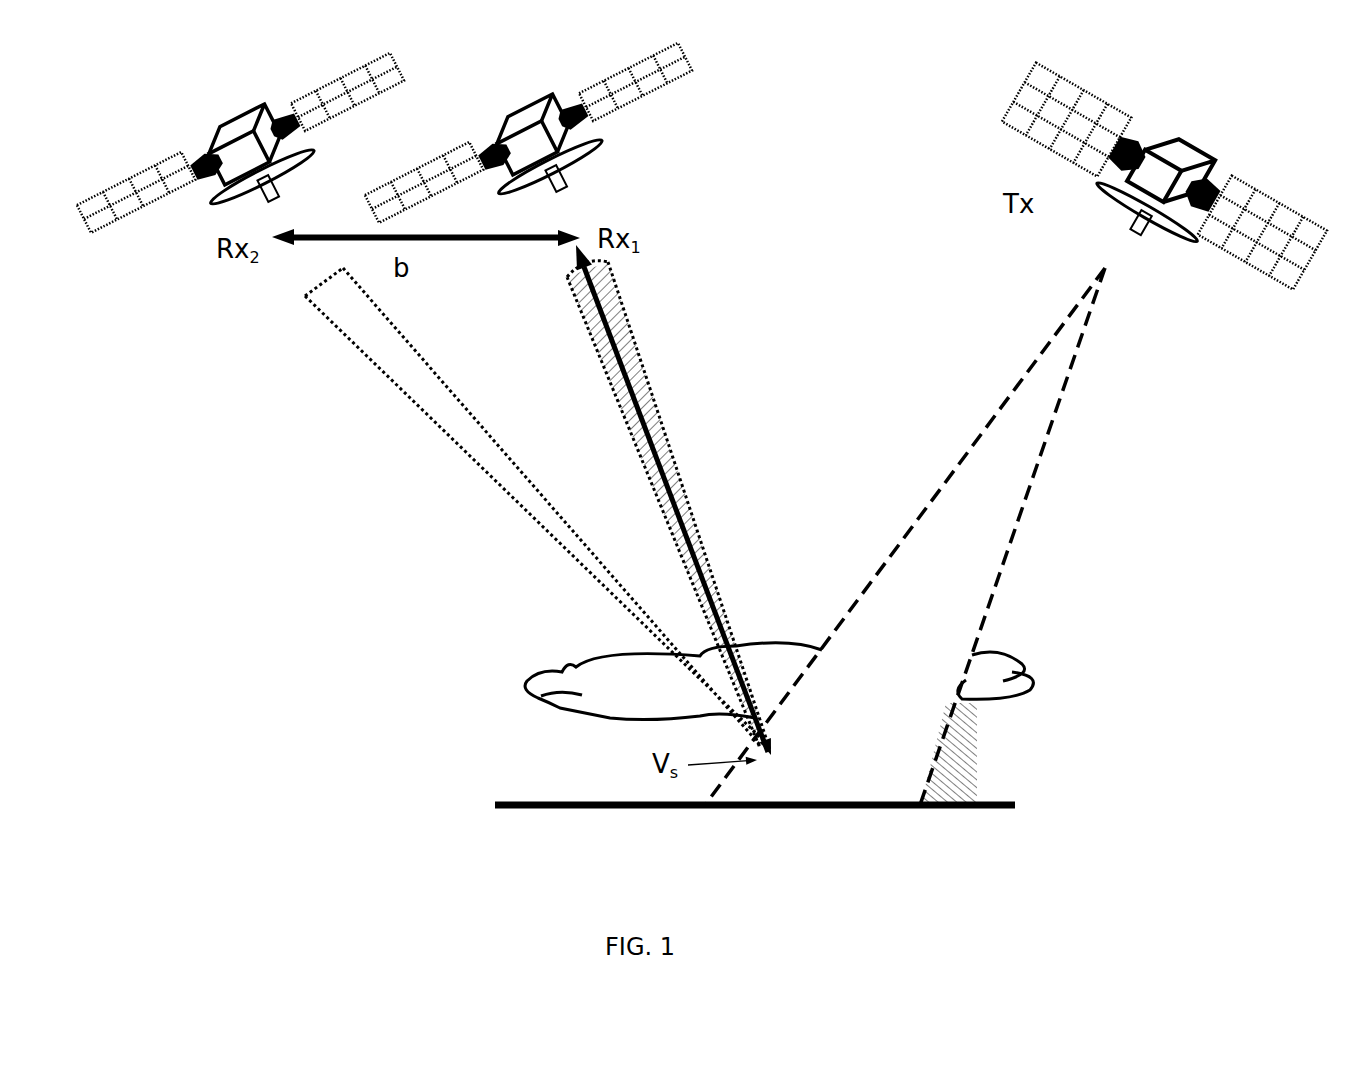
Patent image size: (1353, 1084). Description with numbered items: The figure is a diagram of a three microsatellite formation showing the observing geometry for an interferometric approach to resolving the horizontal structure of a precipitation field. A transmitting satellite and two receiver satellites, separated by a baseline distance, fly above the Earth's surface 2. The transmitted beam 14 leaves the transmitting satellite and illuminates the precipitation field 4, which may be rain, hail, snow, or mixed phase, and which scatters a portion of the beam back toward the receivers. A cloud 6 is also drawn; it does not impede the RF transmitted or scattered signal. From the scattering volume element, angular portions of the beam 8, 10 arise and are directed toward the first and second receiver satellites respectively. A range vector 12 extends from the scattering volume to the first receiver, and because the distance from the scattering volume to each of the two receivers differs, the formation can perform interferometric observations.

The Earth's surface 2 is at (501, 793).
The precipitation field 4 is at (892, 772).
The cloud 6 is at (514, 688).
The angular portion of the beam 8 is at (423, 435).
The angular portion of the beam 10 is at (675, 398).
The range vector 12 is at (624, 341).
The transmitted beam 14 is at (943, 427).